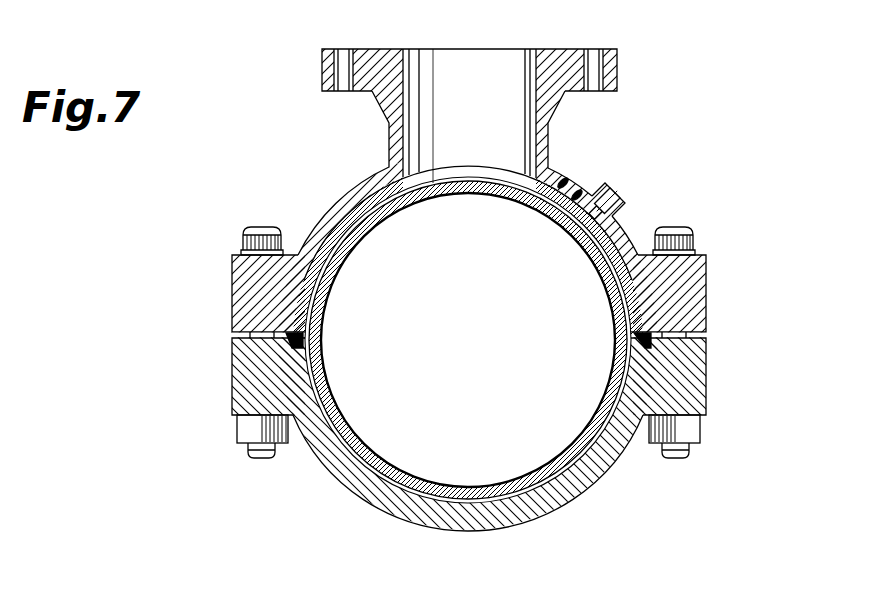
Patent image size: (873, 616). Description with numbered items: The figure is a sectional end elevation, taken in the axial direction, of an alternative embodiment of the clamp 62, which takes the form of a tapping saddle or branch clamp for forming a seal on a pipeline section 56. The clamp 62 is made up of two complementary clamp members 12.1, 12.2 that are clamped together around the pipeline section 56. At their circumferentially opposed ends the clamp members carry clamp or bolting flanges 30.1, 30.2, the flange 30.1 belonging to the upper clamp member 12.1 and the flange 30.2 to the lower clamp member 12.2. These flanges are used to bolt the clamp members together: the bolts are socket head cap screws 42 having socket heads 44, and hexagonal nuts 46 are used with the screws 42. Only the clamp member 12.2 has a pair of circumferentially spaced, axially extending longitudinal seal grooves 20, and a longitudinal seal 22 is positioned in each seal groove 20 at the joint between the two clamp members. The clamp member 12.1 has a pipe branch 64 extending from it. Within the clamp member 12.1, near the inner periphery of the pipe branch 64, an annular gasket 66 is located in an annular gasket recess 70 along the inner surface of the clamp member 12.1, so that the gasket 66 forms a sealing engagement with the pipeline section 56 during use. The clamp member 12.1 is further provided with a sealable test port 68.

The clamp 62 is at (498, 285).
The clamp member 12.1 is at (462, 267).
The clamp member 12.2 is at (502, 358).
The pipe branch 64 is at (617, 63).
The longitudinal seal 22 is at (467, 178).
The high pressure pipeline section 56 is at (330, 271).
The annular gasket 66 is at (560, 178).
The annular gasket recess 70 is at (579, 189).
The sealable test port 68 is at (620, 197).
The clamp flange 30.1 is at (226, 289).
The clamp flange 30.2 is at (222, 356).
The socket head 44 is at (242, 237).
The hexagonal nut 46 is at (247, 431).
The socket head cap screw 42 is at (258, 462).
The longitudinal seal groove 20 is at (296, 353).